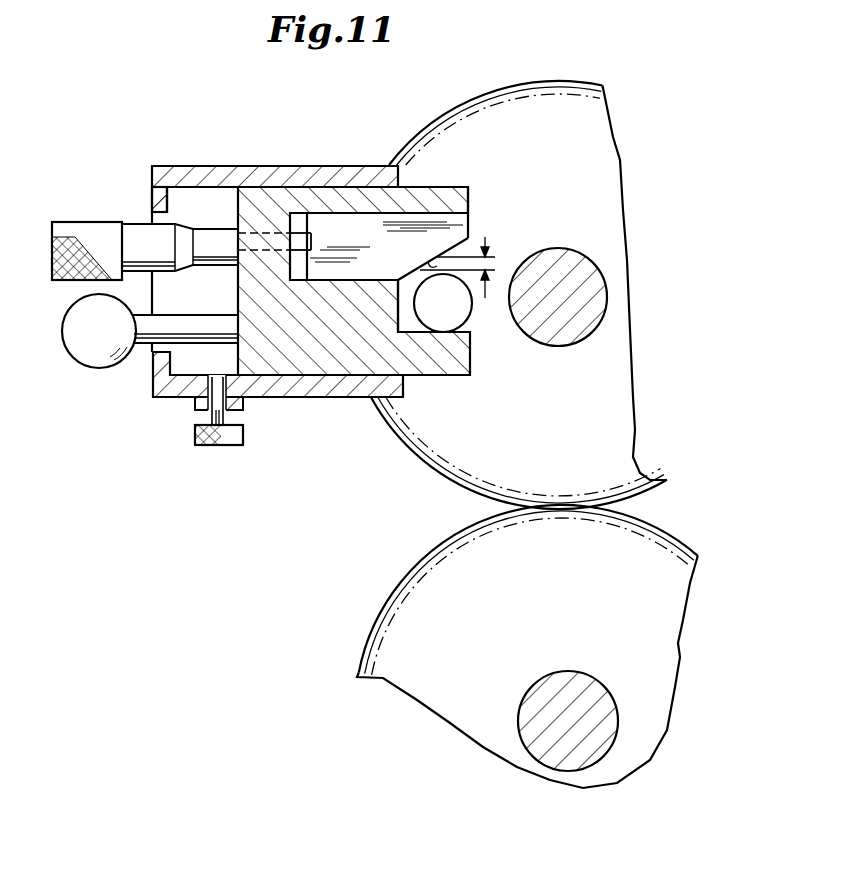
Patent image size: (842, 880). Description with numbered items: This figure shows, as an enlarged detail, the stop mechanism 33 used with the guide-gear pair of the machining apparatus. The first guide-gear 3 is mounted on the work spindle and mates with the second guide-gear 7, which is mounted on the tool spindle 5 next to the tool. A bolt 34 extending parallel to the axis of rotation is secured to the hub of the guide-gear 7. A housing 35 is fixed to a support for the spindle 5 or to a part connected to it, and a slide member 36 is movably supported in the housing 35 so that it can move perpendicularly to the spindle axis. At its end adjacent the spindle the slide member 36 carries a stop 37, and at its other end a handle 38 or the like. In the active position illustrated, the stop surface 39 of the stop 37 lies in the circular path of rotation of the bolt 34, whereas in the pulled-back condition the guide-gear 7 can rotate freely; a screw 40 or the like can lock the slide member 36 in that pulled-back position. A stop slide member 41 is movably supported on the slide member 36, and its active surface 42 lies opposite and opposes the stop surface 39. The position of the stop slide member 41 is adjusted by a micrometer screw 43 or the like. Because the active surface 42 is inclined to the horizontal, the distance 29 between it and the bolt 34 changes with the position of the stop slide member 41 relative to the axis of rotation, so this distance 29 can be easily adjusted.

The first guide-gear 3 is at (417, 607).
The tool spindle 5 is at (562, 330).
The second guide-gear 7 is at (598, 122).
The distance 29 is at (470, 267).
The stop mechanism 33 is at (303, 166).
The bolt 34 is at (458, 302).
The housing 35 is at (213, 167).
The slide member 36 is at (333, 370).
The stop 37 is at (458, 368).
The handle 38 is at (92, 350).
The stop surface 39 is at (462, 332).
The screw 40 is at (215, 447).
The stop slide member 41 is at (457, 233).
The active surface 42 is at (432, 268).
The micrometer screw 43 is at (80, 232).